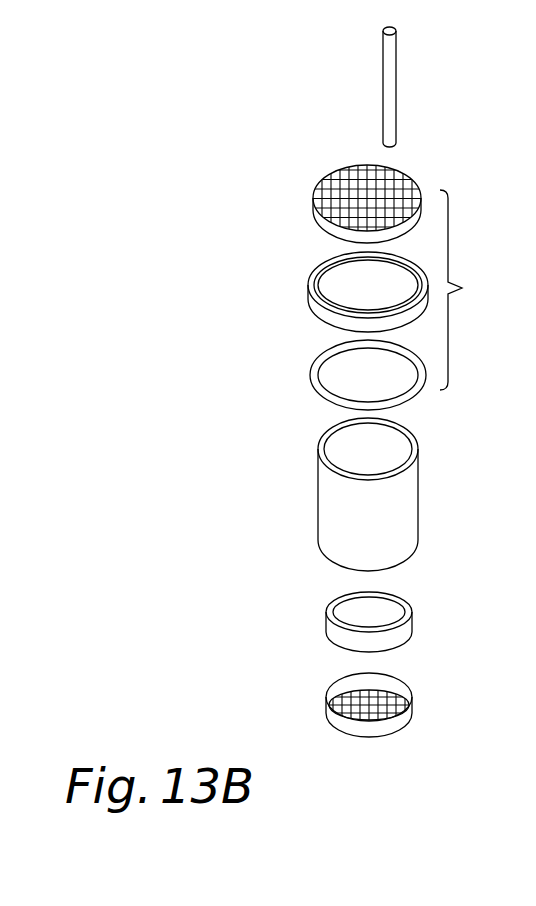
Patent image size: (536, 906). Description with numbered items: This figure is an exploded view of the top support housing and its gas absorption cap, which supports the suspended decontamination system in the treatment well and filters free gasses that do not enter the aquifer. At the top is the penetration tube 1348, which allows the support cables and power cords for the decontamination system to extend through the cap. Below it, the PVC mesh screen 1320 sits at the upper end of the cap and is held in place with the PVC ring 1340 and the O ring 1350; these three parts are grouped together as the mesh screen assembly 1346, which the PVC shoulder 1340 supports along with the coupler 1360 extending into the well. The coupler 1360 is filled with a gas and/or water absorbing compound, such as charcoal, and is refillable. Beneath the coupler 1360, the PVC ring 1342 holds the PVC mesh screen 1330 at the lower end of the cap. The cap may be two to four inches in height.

The penetration tube 1348 is at (383, 88).
The PVC mesh screen 1320 is at (323, 187).
The PVC ring 1340 is at (310, 273).
The O ring 1350 is at (312, 366).
The screen assembly (1320, 1340, 1350) 1346 is at (481, 290).
The coupler 1360 is at (318, 490).
The PVC ring 1342 is at (327, 612).
The PVC mesh screen 1330 is at (328, 695).